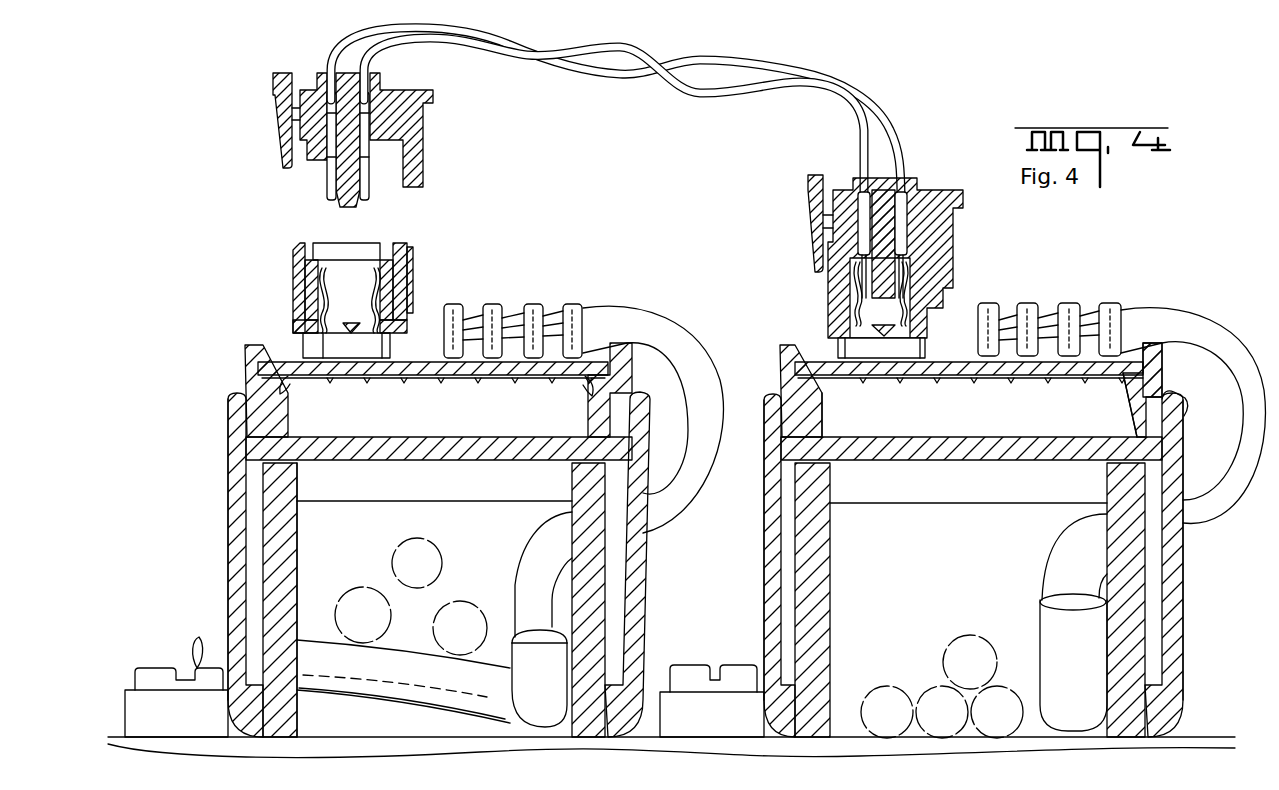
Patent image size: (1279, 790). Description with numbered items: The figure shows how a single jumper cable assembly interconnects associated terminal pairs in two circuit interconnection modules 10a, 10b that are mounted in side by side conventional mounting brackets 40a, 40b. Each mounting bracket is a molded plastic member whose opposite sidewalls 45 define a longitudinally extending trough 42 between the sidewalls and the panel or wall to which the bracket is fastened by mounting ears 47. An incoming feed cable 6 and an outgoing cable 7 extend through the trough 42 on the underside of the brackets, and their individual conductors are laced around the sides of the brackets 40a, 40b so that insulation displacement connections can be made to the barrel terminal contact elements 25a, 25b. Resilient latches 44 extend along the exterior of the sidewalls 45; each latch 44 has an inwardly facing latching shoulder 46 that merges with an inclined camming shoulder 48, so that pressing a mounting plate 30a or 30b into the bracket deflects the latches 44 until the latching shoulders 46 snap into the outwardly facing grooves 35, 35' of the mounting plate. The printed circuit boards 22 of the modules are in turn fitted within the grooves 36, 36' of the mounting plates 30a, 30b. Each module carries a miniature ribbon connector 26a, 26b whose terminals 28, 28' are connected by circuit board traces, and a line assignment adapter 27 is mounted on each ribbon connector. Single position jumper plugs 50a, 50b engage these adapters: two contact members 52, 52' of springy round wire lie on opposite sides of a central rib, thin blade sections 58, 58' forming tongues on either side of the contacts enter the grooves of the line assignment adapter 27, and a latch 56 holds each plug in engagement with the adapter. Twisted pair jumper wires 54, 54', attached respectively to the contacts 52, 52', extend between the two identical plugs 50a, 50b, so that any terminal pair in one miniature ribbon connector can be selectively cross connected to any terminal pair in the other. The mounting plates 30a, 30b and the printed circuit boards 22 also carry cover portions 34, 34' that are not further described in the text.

The incoming feed cable 6 is at (322, 637).
The outgoing cable 7 is at (1045, 648).
The interconnection module 10a is at (588, 236).
The interconnection module 10b is at (1143, 258).
The printed circuit board 22 is at (395, 380).
The barrel terminal contact element 25a is at (584, 318).
The barrel terminal contact element 25b is at (1105, 305).
The miniature ribbon connector 26a is at (312, 346).
The miniature ribbon connector 26b is at (842, 345).
The line assignment adapter 27 is at (392, 246).
The terminal 28 is at (412, 296).
The terminal 28' is at (283, 300).
The mounting plate 30a is at (409, 453).
The mounting plate 30b is at (933, 468).
The cover plate 34 is at (659, 348).
The cover plate rim 34' is at (1178, 333).
The outwardly facing groove 35 is at (232, 391).
The outwardly facing groove 35' is at (581, 390).
The groove 36 is at (303, 398).
The groove 36' is at (562, 391).
The mounting bracket 40a is at (268, 558).
The mounting bracket 40b is at (1128, 610).
The trough 42 is at (367, 728).
The resilient latch 44 is at (232, 522).
The sidewall 45 is at (290, 542).
The latching shoulder 46 is at (822, 435).
The mounting ear 47 is at (164, 700).
The camming shoulder 48 is at (1174, 405).
The jumper plug 50a is at (446, 93).
The jumper plug 50b is at (937, 168).
The contact member 52 is at (383, 158).
The contact member 52' is at (313, 158).
The jumper wire 54 is at (616, 114).
The jumper wire 54' is at (614, 119).
The latch 56 is at (285, 97).
The blade section 58 is at (280, 138).
The blade section 58' is at (422, 130).